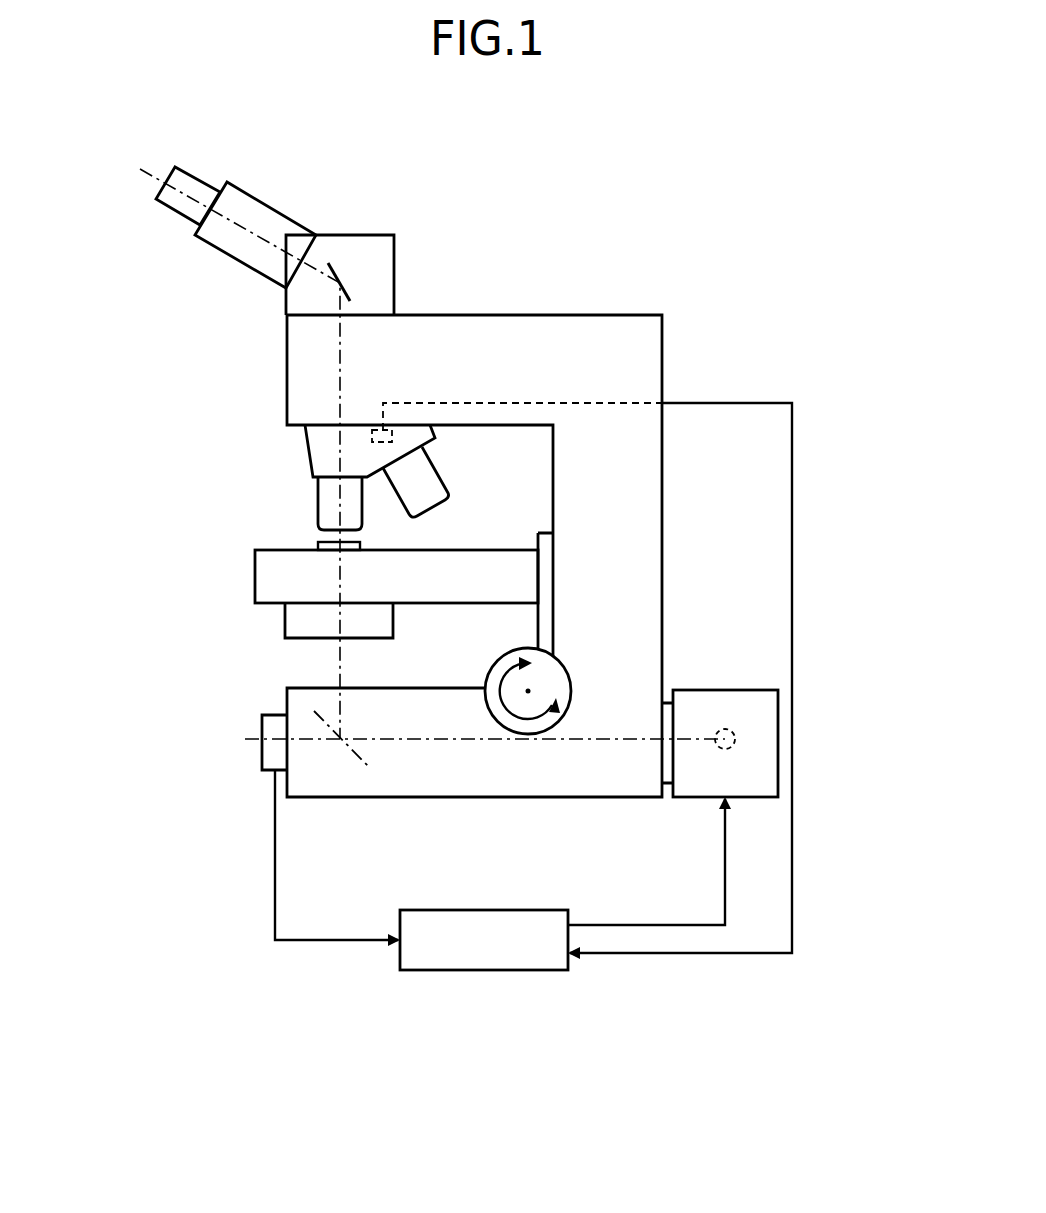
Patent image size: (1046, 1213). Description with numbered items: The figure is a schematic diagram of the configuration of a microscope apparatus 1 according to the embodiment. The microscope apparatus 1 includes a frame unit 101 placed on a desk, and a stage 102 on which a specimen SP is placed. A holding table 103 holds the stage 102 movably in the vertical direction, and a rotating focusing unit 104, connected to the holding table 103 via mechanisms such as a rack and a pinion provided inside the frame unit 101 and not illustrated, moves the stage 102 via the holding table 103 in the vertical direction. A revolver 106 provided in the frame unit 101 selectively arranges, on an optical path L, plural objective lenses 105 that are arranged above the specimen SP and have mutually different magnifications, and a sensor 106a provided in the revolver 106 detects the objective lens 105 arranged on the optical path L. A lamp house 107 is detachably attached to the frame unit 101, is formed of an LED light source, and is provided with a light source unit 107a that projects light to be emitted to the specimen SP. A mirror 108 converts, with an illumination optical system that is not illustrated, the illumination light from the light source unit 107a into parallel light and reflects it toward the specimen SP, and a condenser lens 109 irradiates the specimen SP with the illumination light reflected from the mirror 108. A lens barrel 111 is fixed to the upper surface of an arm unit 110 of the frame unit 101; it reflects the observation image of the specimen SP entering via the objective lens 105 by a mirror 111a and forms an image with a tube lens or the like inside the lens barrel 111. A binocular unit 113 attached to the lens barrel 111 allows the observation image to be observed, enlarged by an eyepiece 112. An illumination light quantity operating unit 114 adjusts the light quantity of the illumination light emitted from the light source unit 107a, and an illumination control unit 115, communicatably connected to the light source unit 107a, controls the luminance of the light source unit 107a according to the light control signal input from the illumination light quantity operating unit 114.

The microscope apparatus 1 is at (690, 178).
The frame unit 101 is at (630, 388).
The stage 102 is at (268, 573).
The holding table 103 is at (543, 598).
The rotating focusing unit 104 is at (542, 680).
The objective lens 105 is at (328, 493).
The revolver 106 is at (328, 450).
The sensor 106a is at (372, 436).
The lamp house 107 is at (693, 774).
The light source unit 107a is at (736, 738).
The mirror 108 is at (358, 752).
The condenser lens 109 is at (302, 625).
The arm unit 110 is at (531, 315).
The lens barrel 111 is at (367, 263).
The mirror 111a is at (343, 292).
The eyepiece 112 is at (177, 217).
The binocular unit 113 is at (273, 230).
The illumination light quantity operating unit 114 is at (258, 750).
The illumination control unit 115 is at (485, 970).
The optical path L is at (140, 173).
The specimen SP is at (317, 543).